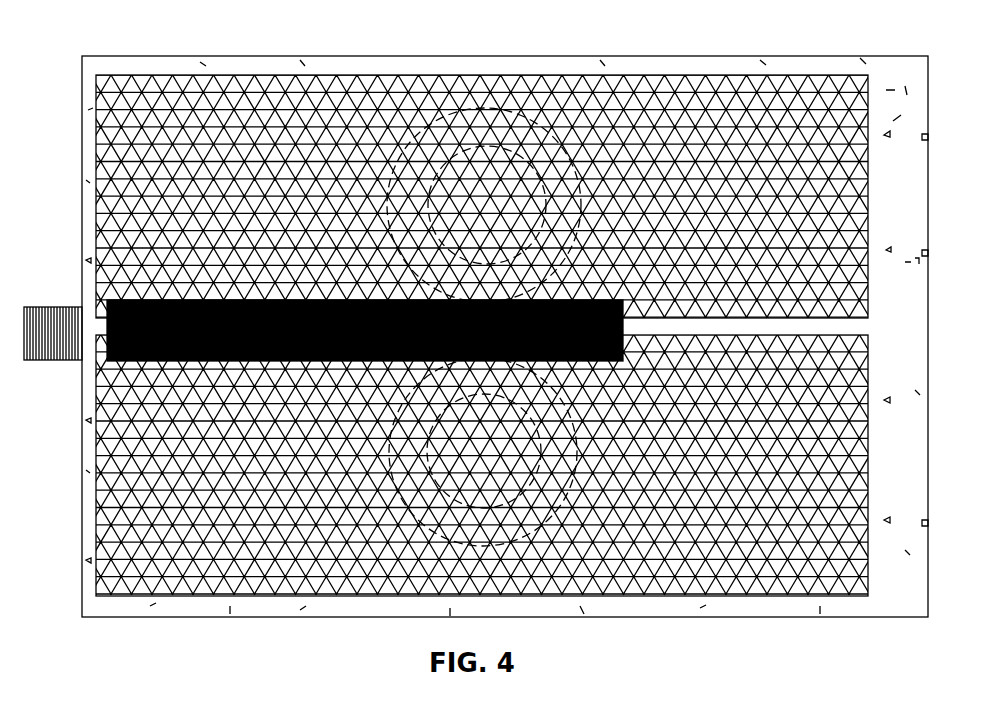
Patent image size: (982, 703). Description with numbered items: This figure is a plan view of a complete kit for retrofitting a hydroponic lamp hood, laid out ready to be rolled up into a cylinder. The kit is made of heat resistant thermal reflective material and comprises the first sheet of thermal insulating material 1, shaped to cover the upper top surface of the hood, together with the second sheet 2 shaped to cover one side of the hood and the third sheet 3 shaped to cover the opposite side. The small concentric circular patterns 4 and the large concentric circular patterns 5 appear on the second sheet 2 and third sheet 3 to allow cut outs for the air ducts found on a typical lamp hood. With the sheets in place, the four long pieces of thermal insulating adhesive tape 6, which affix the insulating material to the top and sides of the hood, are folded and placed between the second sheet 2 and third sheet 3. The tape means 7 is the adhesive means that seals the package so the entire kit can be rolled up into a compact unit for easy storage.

The first sheet of thermal insulating material 1 is at (193, 56).
The second sheet of thermal insulating material 2 is at (237, 597).
The third sheet of thermal insulating material 3 is at (328, 74).
The small concentric circular patterns 4 is at (452, 112).
The large concentric circular patterns 5 is at (500, 145).
The thermal insulating adhesive tape 6 is at (103, 331).
The tape means 7 is at (57, 362).